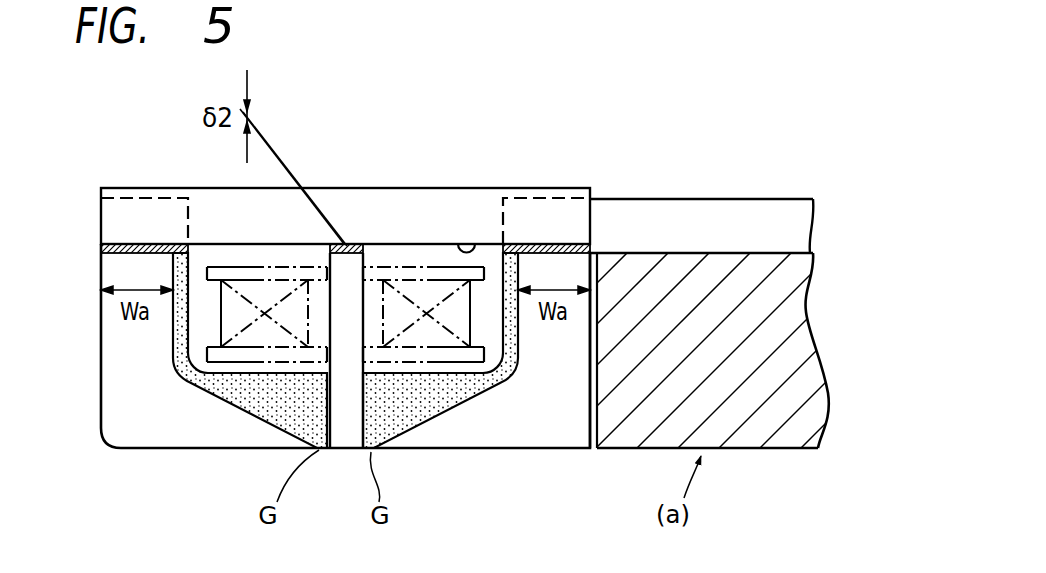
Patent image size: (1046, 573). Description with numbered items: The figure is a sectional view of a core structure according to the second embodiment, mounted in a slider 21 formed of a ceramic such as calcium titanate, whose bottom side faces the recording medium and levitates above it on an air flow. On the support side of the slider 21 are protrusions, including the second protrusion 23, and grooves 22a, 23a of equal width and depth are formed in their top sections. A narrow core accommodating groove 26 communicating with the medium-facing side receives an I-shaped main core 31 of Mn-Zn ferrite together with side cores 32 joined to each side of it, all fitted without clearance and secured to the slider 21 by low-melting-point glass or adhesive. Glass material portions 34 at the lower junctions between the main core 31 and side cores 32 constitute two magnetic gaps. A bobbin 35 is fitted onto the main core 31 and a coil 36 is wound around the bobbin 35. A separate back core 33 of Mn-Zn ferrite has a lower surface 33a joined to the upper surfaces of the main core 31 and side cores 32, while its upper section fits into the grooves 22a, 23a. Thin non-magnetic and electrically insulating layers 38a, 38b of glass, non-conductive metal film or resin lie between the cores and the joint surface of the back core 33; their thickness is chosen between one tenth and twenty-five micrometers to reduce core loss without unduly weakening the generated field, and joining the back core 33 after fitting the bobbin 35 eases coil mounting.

The slider 21 is at (765, 433).
The groove 22a is at (122, 204).
The second protrusion 23 is at (787, 327).
The groove 23a is at (740, 212).
The core accommodating groove 26 is at (587, 407).
The main core 31 is at (343, 440).
The side cores 32 is at (163, 437).
The back core 33 is at (452, 186).
The lower surface 33a is at (469, 249).
The glass material portions 34 is at (257, 409).
The bobbin 35 is at (233, 355).
The coil 36 is at (233, 328).
The non-magnetic and electrically insulating layer 38a is at (352, 243).
The non-magnetic and electrically insulating layer 38b is at (140, 254).